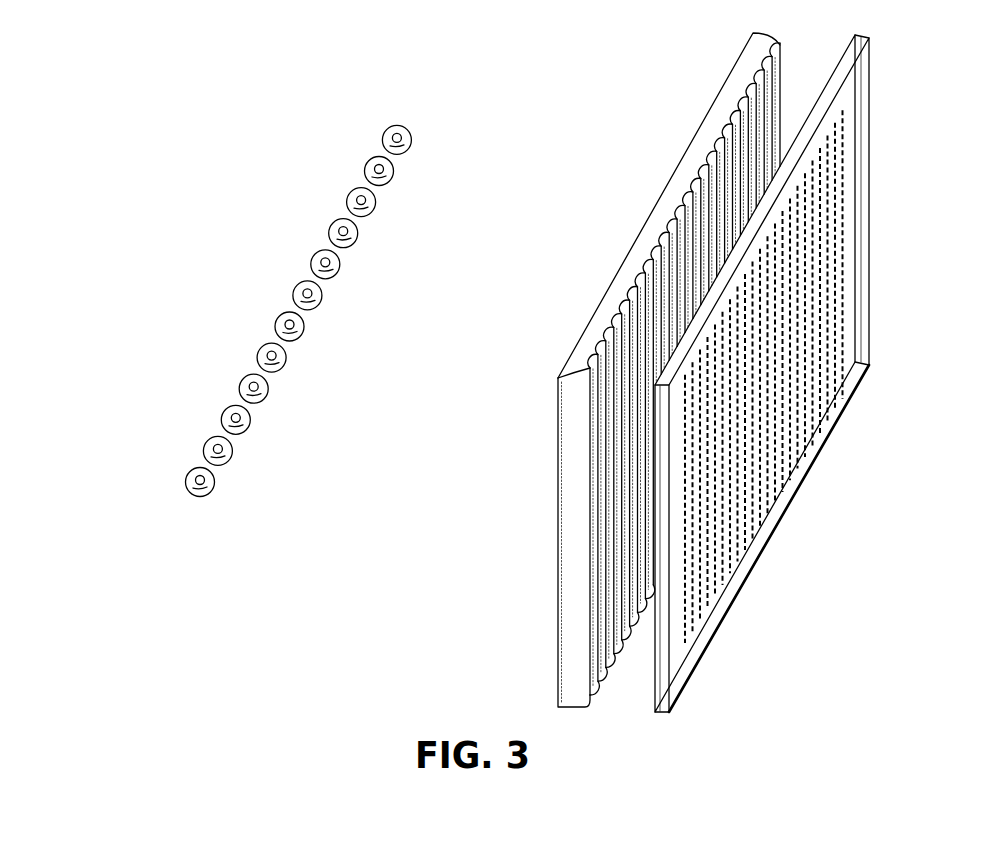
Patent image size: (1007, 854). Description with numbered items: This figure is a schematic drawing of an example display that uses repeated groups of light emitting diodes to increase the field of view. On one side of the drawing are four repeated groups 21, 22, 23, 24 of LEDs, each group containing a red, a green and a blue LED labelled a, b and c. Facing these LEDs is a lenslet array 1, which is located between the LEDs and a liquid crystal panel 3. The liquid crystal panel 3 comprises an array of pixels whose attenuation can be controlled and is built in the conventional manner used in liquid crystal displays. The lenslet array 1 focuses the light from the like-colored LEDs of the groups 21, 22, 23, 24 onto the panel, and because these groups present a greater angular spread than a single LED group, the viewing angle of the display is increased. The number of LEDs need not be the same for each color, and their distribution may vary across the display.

The lenslet array 1 is at (783, 90).
The liquid crystal panel 3 is at (876, 256).
The group of red, green and blue LEDs 21 is at (171, 442).
The group of red, green and blue LEDs 22 is at (224, 348).
The group of red, green and blue LEDs 23 is at (276, 259).
The group of red, green and blue LEDs 24 is at (326, 165).